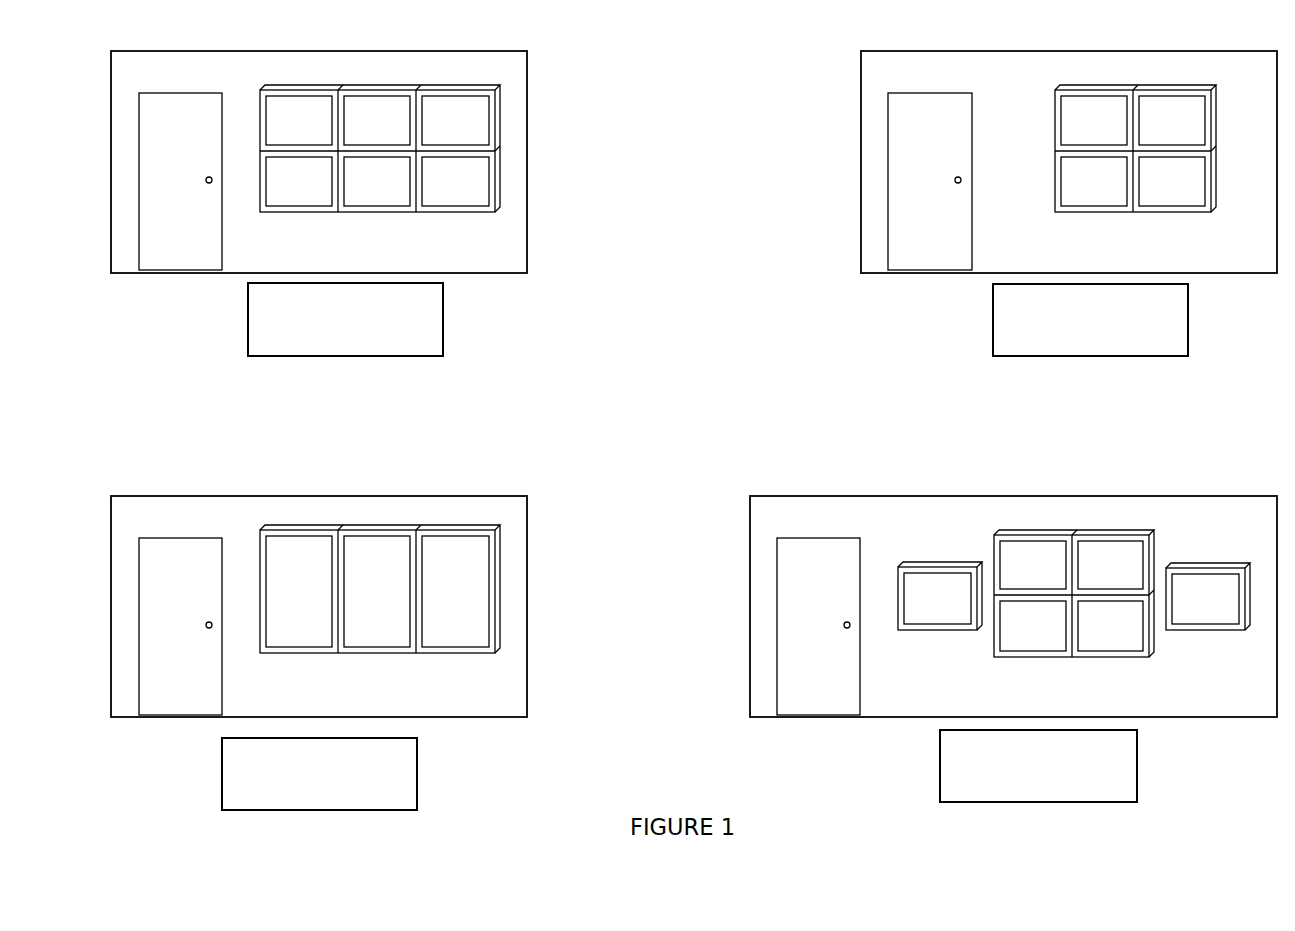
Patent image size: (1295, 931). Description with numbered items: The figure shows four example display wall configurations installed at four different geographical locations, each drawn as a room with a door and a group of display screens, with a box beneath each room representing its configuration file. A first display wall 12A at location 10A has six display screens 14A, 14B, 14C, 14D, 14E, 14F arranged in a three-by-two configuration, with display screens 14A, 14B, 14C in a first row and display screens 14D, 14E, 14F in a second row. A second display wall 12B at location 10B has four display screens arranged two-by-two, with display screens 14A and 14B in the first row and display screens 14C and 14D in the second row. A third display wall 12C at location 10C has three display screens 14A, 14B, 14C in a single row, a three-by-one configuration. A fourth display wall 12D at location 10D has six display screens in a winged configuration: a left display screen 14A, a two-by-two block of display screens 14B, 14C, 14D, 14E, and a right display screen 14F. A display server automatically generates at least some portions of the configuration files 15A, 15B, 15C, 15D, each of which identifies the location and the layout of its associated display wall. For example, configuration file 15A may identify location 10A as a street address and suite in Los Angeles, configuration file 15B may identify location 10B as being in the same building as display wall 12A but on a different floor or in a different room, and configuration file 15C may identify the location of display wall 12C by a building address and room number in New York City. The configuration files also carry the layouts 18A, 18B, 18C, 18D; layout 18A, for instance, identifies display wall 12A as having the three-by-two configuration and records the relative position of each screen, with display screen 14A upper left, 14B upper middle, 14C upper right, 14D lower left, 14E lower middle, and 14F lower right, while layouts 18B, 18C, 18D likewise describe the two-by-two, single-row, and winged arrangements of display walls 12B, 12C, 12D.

The location 10A is at (111, 135).
The location 10B is at (861, 135).
The location 10C is at (111, 580).
The location 10D is at (750, 550).
The first display wall 12A is at (303, 212).
The second display wall 12B is at (1103, 212).
The third display wall 12C is at (317, 653).
The fourth display wall 12D is at (1170, 692).
The display screen 14A is at (278, 135).
The display screen 14B is at (356, 135).
The display screen 14C is at (434, 135).
The display screen 14D is at (278, 196).
The display screen 14E is at (356, 196).
The display screen 14F is at (434, 196).
The configuration file 15A is at (358, 356).
The configuration file 15B is at (1082, 356).
The configuration file 15C is at (373, 810).
The configuration file 15D is at (1040, 802).
The layout 18A is at (346, 333).
The layout 18B is at (1090, 340).
The layout 18C is at (320, 789).
The layout 18D is at (1038, 780).